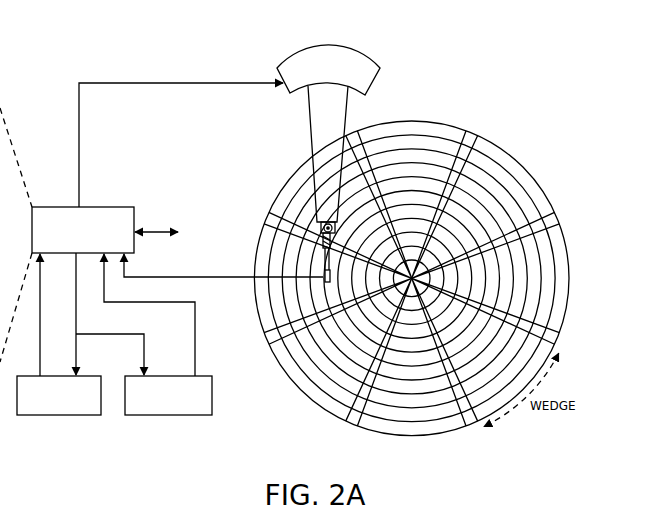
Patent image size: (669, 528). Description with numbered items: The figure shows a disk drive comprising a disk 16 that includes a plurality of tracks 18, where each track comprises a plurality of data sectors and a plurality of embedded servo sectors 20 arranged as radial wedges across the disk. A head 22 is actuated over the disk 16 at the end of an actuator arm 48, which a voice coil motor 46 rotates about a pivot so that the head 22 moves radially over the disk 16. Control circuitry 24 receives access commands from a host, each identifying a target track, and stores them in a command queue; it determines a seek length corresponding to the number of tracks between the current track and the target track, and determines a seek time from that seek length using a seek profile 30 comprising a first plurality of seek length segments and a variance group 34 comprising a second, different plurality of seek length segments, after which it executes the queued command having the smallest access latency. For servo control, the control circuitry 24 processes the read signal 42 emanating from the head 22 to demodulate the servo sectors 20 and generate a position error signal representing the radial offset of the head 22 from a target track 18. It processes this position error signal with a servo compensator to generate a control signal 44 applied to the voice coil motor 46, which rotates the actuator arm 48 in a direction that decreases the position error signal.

The disk 16 is at (521, 160).
The tracks 18 is at (408, 143).
The servo sectors 20 is at (472, 136).
The head 22 is at (321, 282).
The control circuitry 24 is at (106, 207).
The seek profile 30 is at (59, 416).
The variance group 34 is at (171, 416).
The read signal 42 is at (237, 276).
The control signal 44 is at (79, 138).
The voice coil motor 46 is at (291, 92).
The actuator arm 48 is at (314, 136).